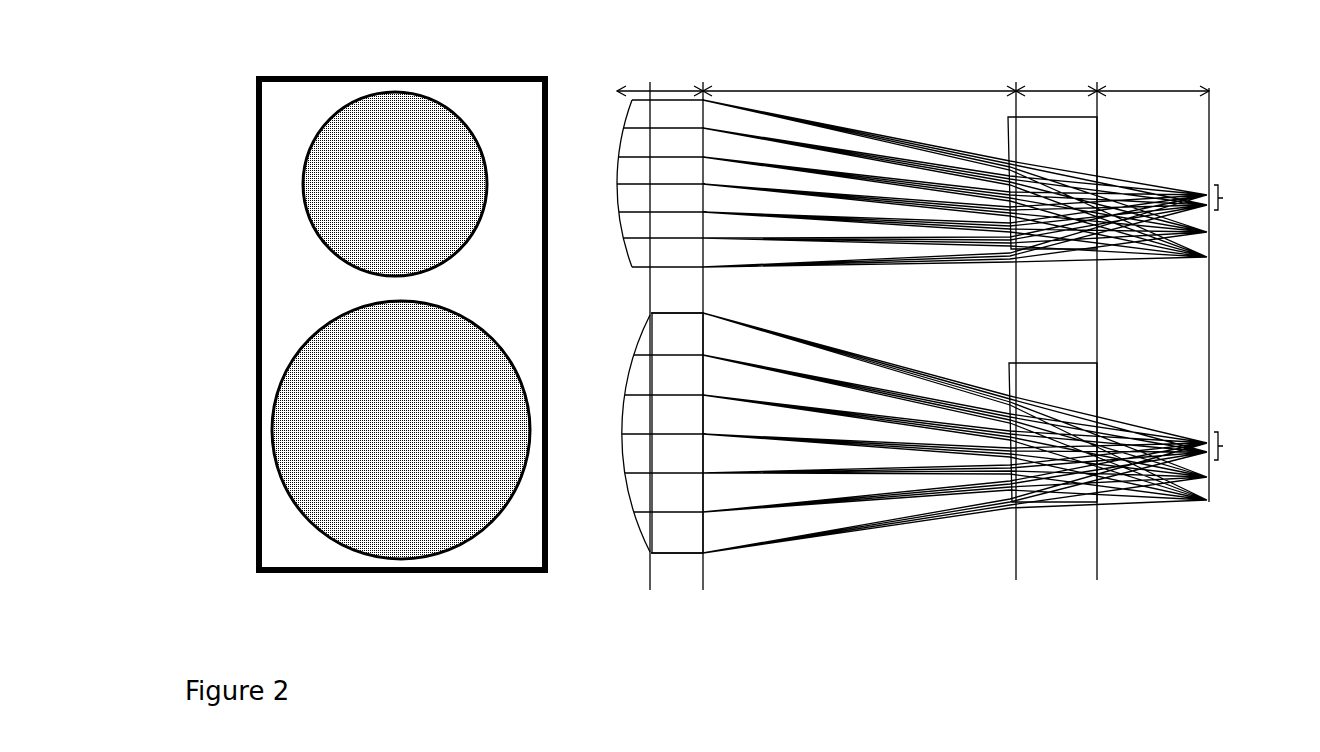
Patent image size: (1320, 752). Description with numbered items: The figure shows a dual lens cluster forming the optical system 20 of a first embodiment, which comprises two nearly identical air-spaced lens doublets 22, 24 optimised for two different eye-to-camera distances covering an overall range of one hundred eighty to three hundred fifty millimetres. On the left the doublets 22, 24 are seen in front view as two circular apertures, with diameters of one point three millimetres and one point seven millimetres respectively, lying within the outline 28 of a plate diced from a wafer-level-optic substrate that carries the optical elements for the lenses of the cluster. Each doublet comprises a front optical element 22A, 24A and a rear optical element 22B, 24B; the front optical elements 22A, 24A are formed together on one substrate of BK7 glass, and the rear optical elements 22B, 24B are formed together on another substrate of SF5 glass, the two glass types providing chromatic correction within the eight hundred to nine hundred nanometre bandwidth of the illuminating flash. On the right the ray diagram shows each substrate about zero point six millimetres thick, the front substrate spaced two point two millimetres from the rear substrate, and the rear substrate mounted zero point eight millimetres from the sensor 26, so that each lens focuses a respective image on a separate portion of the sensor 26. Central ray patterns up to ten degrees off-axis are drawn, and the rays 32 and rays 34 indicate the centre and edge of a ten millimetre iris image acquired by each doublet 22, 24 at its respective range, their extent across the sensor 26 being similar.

The optical system 20 is at (873, 563).
The lens doublet 22 is at (302, 185).
The lens doublet 24 is at (282, 477).
The sensor 26 is at (1213, 318).
The outline 28 is at (257, 140).
The front optical element 22A is at (712, 268).
The front optical element 24A is at (715, 553).
The rear optical element 22B is at (1107, 262).
The rear optical element 24B is at (1107, 512).
The rays 32 is at (1234, 197).
The rays 34 is at (1234, 446).